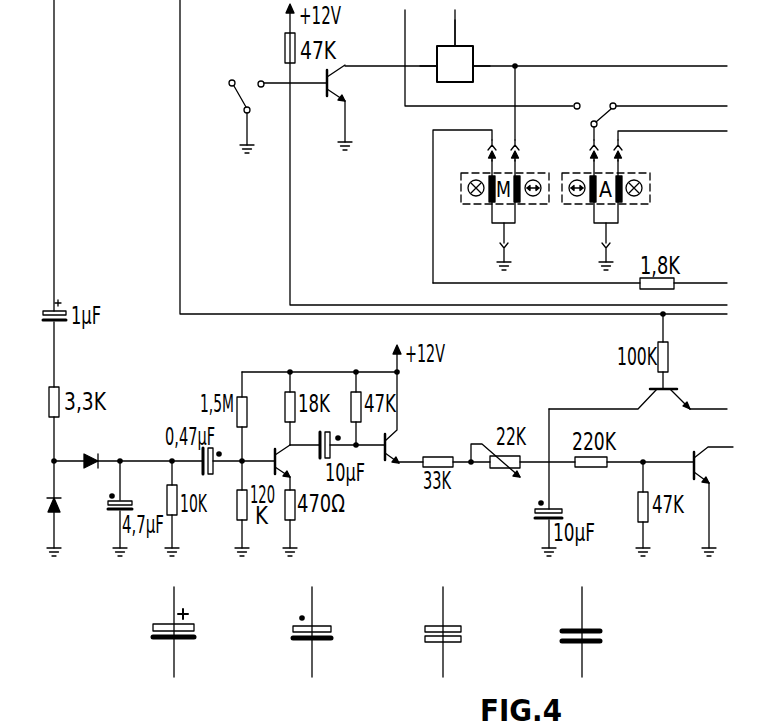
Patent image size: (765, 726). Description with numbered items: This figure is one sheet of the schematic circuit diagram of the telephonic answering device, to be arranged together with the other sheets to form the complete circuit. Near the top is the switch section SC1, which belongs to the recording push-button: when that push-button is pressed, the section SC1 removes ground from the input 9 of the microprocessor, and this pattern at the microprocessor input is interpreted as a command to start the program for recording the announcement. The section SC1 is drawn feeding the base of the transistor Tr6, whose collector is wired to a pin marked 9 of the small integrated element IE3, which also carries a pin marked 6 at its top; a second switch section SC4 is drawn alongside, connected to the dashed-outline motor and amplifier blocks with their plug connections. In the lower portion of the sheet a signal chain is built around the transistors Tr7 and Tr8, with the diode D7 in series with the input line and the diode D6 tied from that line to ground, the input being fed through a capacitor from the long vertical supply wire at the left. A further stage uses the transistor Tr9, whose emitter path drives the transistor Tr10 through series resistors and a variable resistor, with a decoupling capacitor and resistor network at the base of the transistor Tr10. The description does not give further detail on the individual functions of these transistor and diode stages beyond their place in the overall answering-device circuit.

The transistor Tr6 is at (320, 107).
The transistor Tr7 is at (294, 461).
The transistor Tr8 is at (404, 417).
The transistor Tr9 is at (638, 411).
The transistor Tr10 is at (717, 501).
The section of recording push-button SC1 is at (259, 116).
The switch SC4 is at (650, 107).
The diode D6 is at (68, 507).
The diode D7 is at (90, 447).
The integrated element IE3 is at (455, 64).
The output of microprocessor 6 is at (448, 32).
The input of microprocessor 9 is at (455, 54).